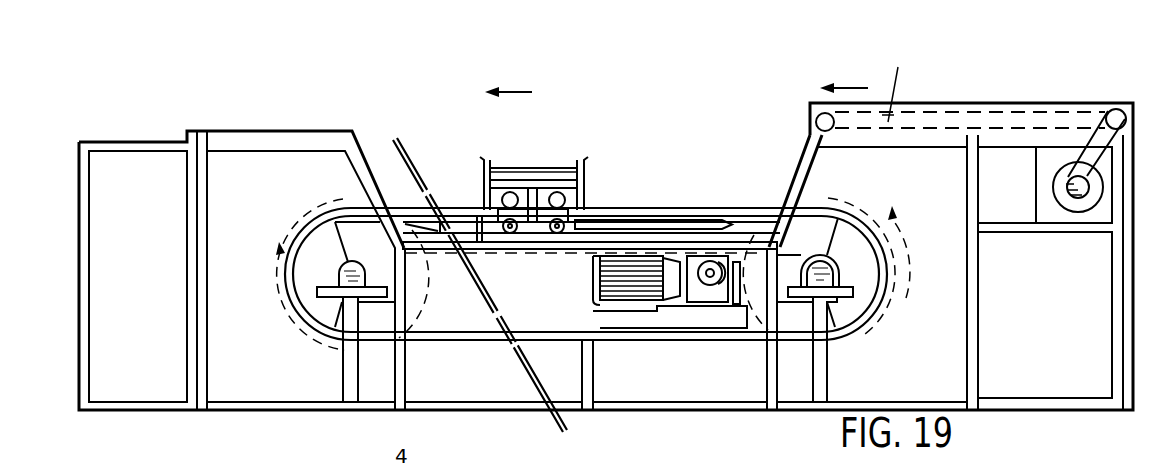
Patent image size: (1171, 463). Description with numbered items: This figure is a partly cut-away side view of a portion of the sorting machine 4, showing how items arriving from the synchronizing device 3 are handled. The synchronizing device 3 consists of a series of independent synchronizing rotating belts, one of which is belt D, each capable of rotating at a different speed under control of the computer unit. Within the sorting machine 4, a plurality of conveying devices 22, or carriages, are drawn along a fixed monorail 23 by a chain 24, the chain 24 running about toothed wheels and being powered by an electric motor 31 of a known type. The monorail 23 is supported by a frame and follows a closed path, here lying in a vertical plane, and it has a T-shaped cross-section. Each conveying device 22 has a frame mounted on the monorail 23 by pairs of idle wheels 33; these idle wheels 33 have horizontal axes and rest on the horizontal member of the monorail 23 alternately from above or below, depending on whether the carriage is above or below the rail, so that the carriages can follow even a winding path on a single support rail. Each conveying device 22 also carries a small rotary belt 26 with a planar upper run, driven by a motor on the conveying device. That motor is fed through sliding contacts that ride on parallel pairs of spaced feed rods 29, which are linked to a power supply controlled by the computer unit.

The synchronizing device 3 is at (1053, 92).
The sorting machine 4 is at (608, 123).
The conveying device 22 is at (535, 161).
The monorail 23 is at (708, 328).
The chain 24 is at (305, 333).
The rotary belt 26 is at (536, 176).
The feed rods 29 is at (665, 222).
The electric motor 31 is at (643, 290).
The idle wheels 33 is at (495, 212).
The synchronizing rotating belt D is at (865, 83).